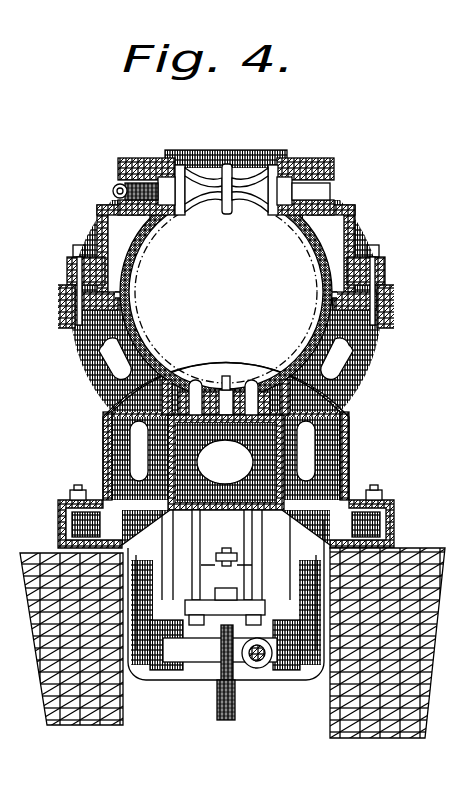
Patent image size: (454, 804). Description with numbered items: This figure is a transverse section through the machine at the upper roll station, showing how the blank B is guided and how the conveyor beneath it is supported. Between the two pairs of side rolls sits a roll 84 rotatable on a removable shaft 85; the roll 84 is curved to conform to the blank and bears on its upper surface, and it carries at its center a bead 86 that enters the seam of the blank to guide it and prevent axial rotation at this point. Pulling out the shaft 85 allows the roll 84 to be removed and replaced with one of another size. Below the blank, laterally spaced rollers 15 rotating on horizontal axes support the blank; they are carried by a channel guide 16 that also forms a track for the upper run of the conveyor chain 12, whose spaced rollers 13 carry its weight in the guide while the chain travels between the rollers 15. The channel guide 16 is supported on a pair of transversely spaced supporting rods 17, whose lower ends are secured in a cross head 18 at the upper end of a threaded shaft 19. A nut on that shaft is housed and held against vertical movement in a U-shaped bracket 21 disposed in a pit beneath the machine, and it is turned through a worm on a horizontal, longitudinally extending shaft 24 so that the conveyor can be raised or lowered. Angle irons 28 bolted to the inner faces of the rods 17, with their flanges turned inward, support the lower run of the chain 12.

The removable shaft 85 is at (118, 186).
The bead 86 is at (207, 208).
The roll 84 is at (260, 205).
The bore B is at (305, 280).
The rollers 15 is at (194, 382).
The channel guide 16 is at (265, 388).
The chain 12 is at (226, 390).
The spaced rollers 13 is at (225, 462).
The supporting rods 17 is at (245, 523).
The angle irons 28 is at (205, 565).
The cross head 18 is at (185, 610).
The threaded shaft 19 is at (226, 720).
The shaft 24 is at (262, 668).
The U-shaped bracket 21 is at (298, 672).